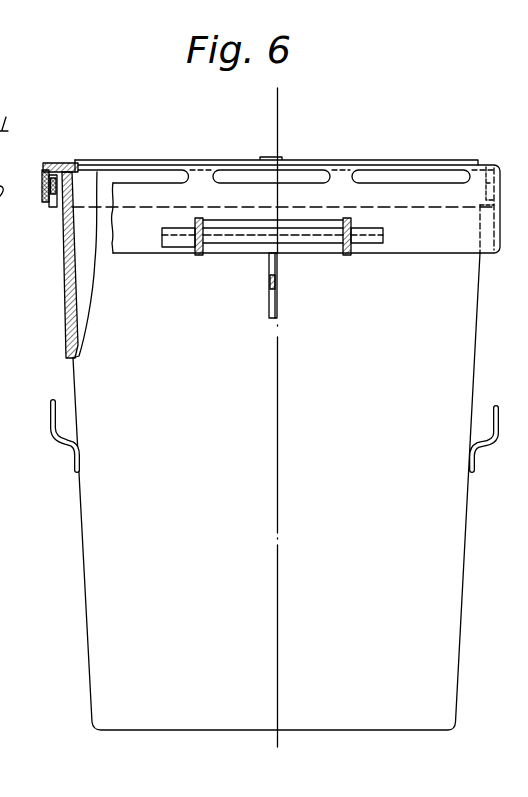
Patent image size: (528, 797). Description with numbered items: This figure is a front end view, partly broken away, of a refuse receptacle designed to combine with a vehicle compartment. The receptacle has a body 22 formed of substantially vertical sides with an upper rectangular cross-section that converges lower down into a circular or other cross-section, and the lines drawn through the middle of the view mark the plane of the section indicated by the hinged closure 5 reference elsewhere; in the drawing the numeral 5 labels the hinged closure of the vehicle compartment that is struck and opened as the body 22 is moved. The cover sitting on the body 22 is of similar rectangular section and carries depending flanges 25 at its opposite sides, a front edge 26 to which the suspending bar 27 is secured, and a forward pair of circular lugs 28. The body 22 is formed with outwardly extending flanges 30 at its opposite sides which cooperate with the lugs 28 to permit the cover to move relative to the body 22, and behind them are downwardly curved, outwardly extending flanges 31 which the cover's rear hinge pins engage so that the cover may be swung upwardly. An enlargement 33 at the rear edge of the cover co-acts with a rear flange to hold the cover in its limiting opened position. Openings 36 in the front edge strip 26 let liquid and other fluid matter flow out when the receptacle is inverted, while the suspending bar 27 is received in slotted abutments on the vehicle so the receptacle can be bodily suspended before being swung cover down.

The hinged closure 5 is at (262, 747).
The body portion 22 is at (274, 451).
The depending flanges 25 is at (49, 205).
The front edge 26 is at (286, 206).
The suspending bar 27 is at (180, 243).
The circular lugs 28 is at (44, 184).
The outwardly extending flanges 30 is at (50, 163).
The downwardly curved, outwardly extending flanges 31 is at (53, 208).
The enlargement 33 is at (353, 160).
The openings 36 is at (227, 173).